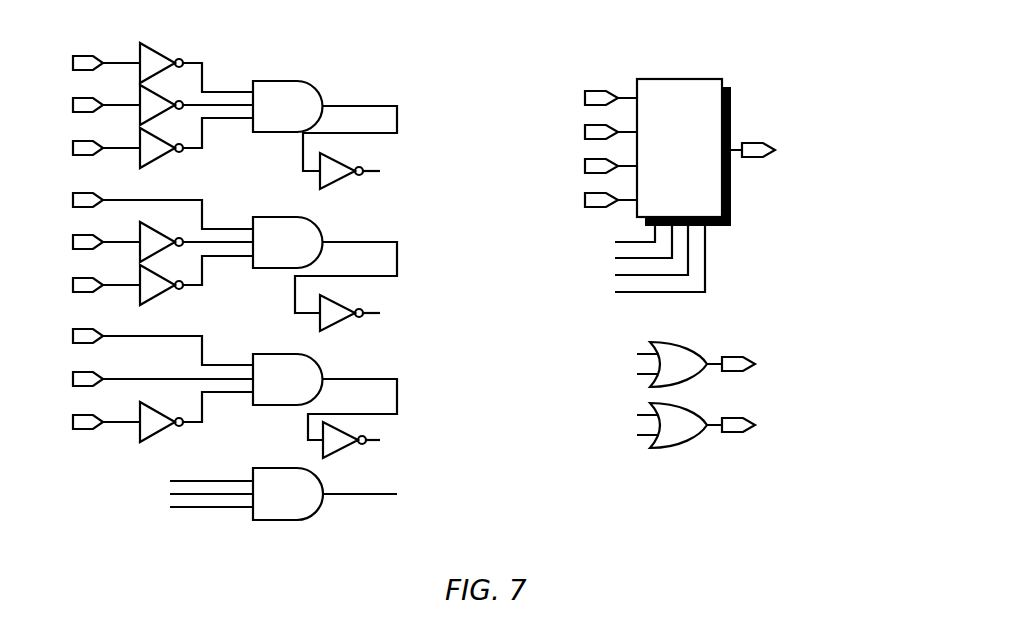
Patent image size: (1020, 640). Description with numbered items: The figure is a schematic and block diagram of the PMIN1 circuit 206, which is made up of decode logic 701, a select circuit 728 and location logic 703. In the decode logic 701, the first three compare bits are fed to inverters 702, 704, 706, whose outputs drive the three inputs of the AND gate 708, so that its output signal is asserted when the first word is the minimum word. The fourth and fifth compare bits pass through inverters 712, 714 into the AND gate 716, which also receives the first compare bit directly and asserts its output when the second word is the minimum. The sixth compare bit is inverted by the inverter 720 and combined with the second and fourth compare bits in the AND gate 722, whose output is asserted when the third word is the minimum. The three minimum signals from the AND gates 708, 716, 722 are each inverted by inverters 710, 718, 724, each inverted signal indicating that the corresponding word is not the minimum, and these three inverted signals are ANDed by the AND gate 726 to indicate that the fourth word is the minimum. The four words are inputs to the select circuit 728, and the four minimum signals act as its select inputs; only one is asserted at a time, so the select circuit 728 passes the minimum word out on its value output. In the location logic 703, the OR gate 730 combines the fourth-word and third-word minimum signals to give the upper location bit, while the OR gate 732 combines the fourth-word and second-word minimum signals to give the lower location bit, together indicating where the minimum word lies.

The PMIN1 circuit 206 is at (460, 540).
The decode logic 701 is at (443, 83).
The inverter 702 is at (140, 57).
The inverter 704 is at (140, 98).
The inverter 706 is at (140, 140).
The AND gate 708 is at (271, 114).
The inverter 710 is at (348, 163).
The inverter 712 is at (140, 236).
The inverter 714 is at (140, 279).
The AND gate 716 is at (271, 250).
The inverter 718 is at (348, 305).
The inverter 720 is at (140, 416).
The AND gate 722 is at (271, 387).
The inverter 724 is at (320, 449).
The AND gate 726 is at (271, 502).
The select circuit 728 is at (669, 168).
The location logic 703 is at (787, 329).
The OR gate 730 is at (669, 372).
The OR gate 732 is at (669, 433).